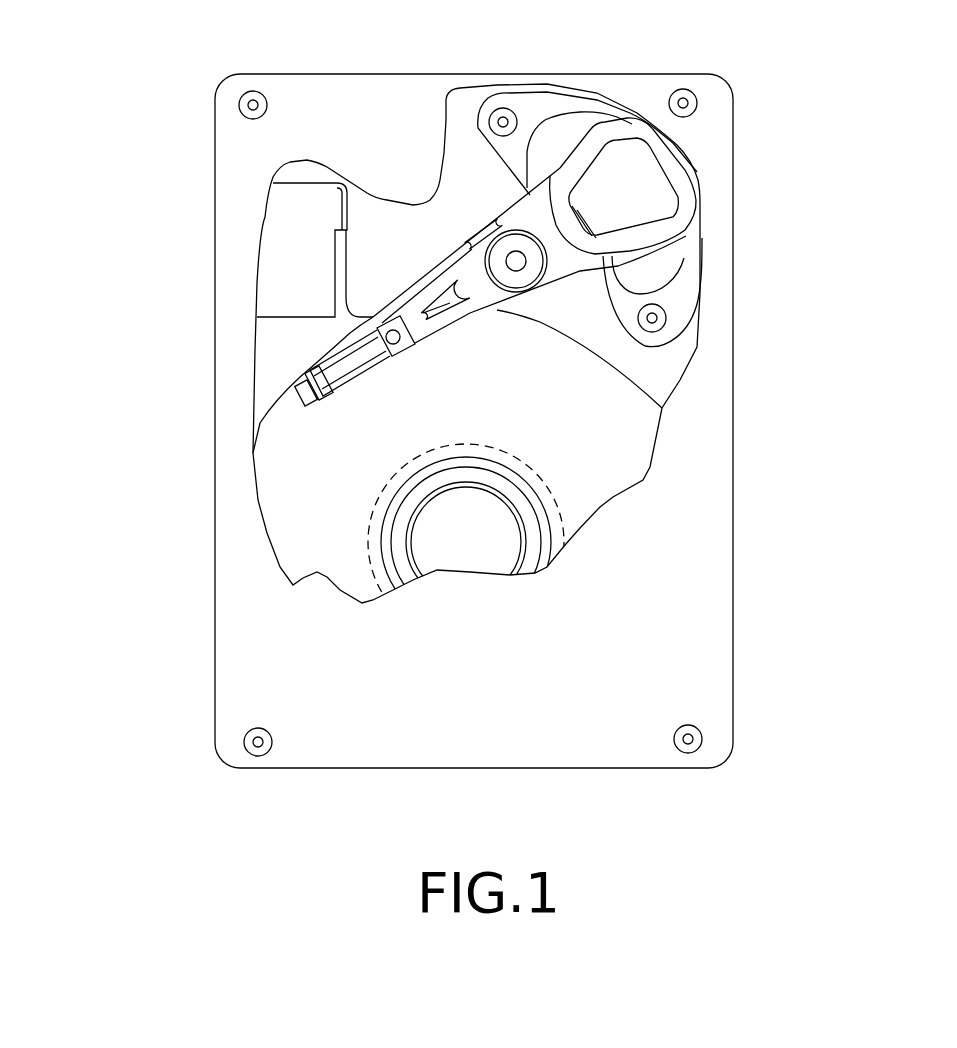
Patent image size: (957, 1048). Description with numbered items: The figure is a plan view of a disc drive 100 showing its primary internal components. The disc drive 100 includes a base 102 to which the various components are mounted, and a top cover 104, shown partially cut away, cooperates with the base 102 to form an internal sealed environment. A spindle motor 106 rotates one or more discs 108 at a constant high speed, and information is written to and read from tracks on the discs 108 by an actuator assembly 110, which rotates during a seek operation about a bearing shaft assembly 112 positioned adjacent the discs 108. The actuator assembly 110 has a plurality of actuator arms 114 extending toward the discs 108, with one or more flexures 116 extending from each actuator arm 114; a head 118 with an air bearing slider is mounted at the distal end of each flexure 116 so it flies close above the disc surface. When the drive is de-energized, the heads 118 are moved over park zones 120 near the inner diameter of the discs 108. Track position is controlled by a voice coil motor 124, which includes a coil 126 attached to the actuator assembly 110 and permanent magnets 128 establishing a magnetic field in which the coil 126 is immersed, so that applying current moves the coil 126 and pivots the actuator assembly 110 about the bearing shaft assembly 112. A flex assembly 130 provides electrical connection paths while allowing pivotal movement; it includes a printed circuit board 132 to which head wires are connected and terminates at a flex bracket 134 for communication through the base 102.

The disc drive 100 is at (185, 68).
The base 102 is at (283, 355).
The top cover 104 is at (270, 645).
The spindle motor 106 is at (467, 543).
The disc 108 is at (603, 477).
The actuator assembly 110 is at (494, 320).
The bearing shaft assembly 112 is at (517, 262).
The actuator arm 114 is at (447, 327).
The flexure 116 is at (332, 377).
The head 118 is at (302, 402).
The park zone 120 is at (372, 547).
The voice coil motor 124 is at (571, 128).
The coil 126 is at (683, 190).
The permanent magnet 128 is at (538, 148).
The flex assembly 130 is at (432, 265).
The printed circuit board 132 is at (480, 227).
The flex bracket 134 is at (290, 242).